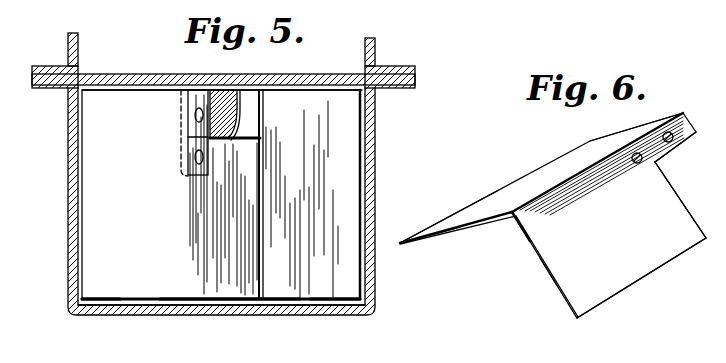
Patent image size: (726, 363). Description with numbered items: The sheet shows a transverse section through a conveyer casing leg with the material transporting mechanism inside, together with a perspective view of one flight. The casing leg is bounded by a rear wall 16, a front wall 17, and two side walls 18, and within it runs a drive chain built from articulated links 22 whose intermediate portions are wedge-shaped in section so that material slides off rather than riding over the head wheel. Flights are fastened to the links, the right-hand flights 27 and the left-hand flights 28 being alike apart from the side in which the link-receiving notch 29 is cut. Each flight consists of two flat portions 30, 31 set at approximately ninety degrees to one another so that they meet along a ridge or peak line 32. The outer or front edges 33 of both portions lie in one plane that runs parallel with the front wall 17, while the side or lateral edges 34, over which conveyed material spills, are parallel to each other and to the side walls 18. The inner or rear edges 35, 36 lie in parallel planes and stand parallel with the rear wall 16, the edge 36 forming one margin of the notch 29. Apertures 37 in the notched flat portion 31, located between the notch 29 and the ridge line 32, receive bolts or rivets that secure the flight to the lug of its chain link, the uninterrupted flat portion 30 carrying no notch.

In FIG. 5, the rear wall 16 is at (308, 77).
In FIG. 5, the front wall 17 is at (227, 317).
In FIG. 5, the side walls 18 is at (68, 210).
In FIG. 5, the articulated links 22 is at (224, 89).
In FIG. 5, the right-hand flights 27 is at (327, 310).
In FIG. 5, the left-hand flight 28 is at (126, 307).
In FIG. 6, the left-hand flight 28 is at (516, 236).
In FIG. 6, the notch 29 is at (671, 177).
In FIG. 5, the flat portion 30 is at (138, 210).
In FIG. 6, the flat portion 30 is at (540, 178).
In FIG. 5, the flat portion 31 is at (238, 232).
In FIG. 6, the flat portion 31 is at (608, 240).
In FIG. 5, the ridge or peak line 32 is at (187, 250).
In FIG. 6, the ridge or peak line 32 is at (578, 173).
In FIG. 5, the outer or front edges 33 is at (173, 300).
In FIG. 6, the outer or front edges 33 is at (443, 234).
In FIG. 5, the side or lateral edges 34 is at (82, 268).
In FIG. 6, the side or lateral edges 34 is at (497, 191).
In FIG. 5, the inner or rear edge 35 is at (147, 91).
In FIG. 6, the inner or rear edge 35 is at (625, 126).
In FIG. 5, the inner or rear edge 36 is at (245, 142).
In FIG. 6, the inner or rear edge 36 is at (689, 212).
In FIG. 6, the apertures 37 is at (668, 131).